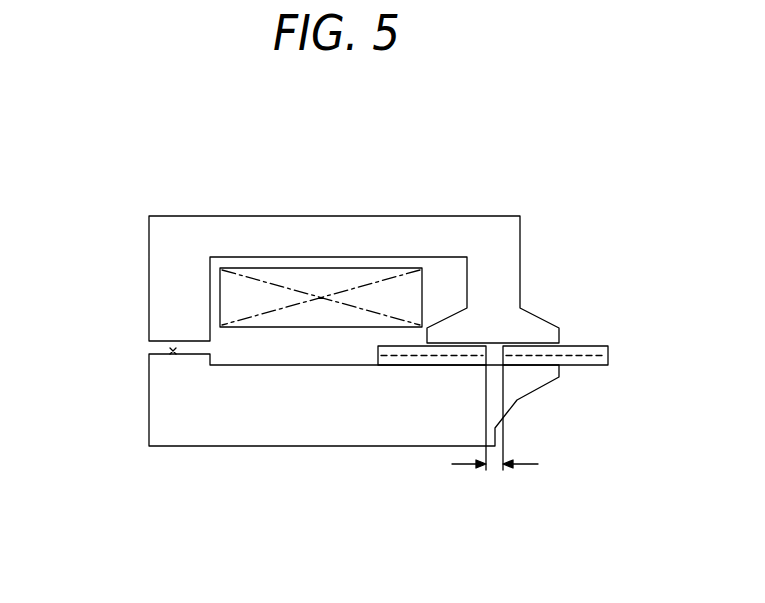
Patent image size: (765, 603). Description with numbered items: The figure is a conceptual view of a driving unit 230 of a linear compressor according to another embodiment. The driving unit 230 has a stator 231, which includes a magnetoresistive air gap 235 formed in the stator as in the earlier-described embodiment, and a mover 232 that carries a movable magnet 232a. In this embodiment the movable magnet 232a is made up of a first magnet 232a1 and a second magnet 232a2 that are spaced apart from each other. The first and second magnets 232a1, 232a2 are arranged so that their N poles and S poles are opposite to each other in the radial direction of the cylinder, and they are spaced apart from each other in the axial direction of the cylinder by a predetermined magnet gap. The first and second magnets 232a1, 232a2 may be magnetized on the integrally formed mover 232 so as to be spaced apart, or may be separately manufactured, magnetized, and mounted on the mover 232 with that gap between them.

The driving unit 230 is at (133, 178).
The stator 231 is at (146, 262).
The mover 232 is at (577, 337).
The movable magnet 232a is at (592, 525).
The first magnet 232a1 is at (423, 366).
The second magnet 232a2 is at (566, 366).
The magnetoresistive air gap 235 is at (168, 350).